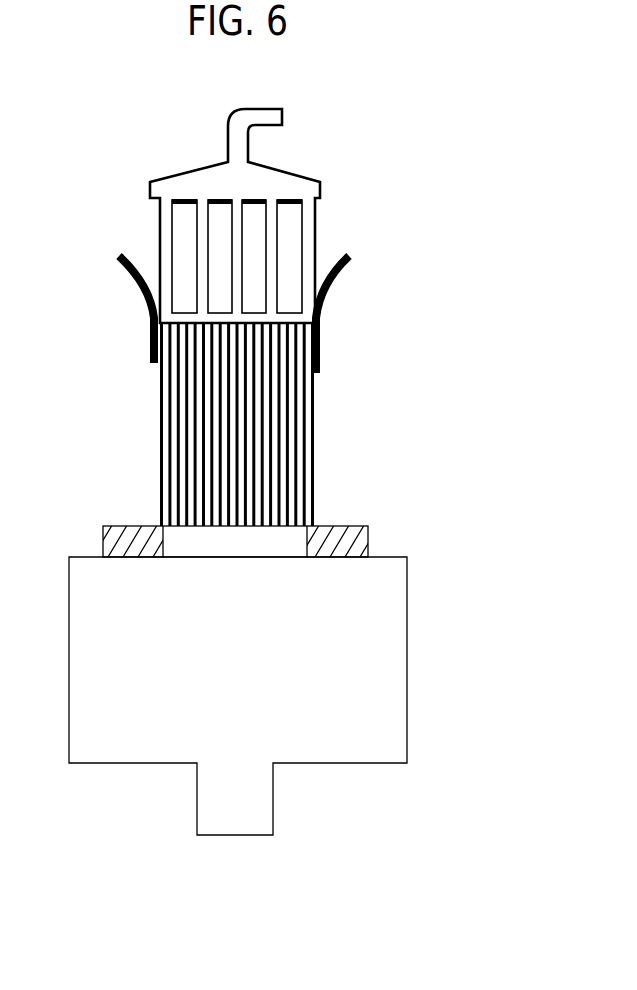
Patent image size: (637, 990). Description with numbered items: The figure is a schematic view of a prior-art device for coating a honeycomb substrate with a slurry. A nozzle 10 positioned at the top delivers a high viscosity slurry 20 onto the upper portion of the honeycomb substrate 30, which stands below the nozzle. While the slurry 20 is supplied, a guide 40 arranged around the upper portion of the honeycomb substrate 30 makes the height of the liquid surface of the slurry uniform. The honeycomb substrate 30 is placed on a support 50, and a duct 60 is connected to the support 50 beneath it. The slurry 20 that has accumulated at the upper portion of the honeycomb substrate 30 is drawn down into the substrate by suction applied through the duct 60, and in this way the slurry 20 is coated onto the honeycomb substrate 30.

The nozzle 10 is at (211, 216).
The slurry 20 is at (197, 242).
The honeycomb substrate 30 is at (282, 477).
The guide 40 is at (337, 279).
The support 50 is at (355, 540).
The duct 60 is at (385, 726).